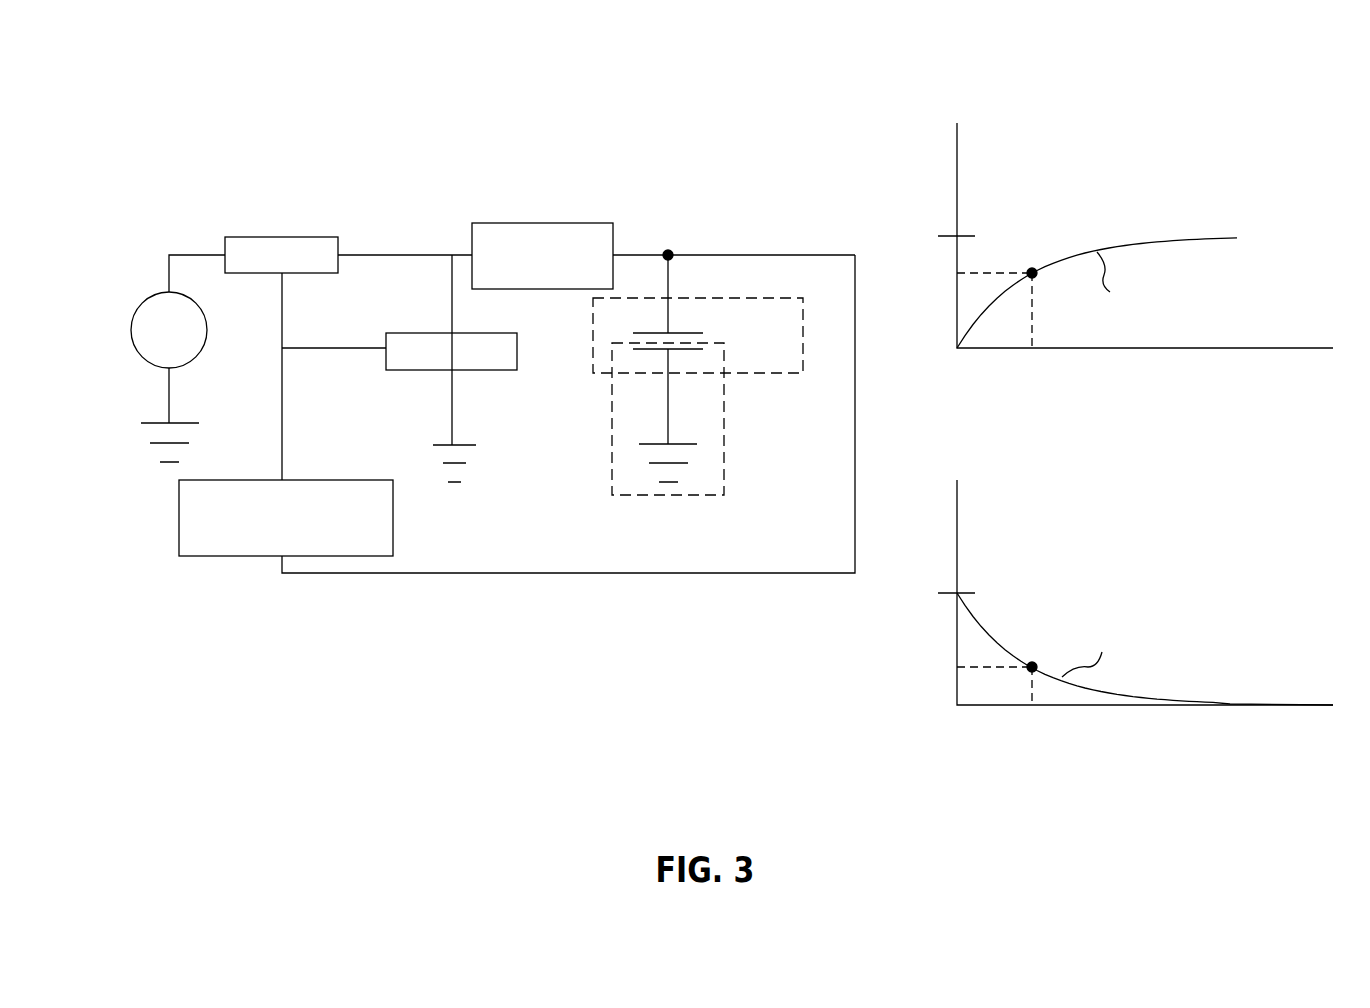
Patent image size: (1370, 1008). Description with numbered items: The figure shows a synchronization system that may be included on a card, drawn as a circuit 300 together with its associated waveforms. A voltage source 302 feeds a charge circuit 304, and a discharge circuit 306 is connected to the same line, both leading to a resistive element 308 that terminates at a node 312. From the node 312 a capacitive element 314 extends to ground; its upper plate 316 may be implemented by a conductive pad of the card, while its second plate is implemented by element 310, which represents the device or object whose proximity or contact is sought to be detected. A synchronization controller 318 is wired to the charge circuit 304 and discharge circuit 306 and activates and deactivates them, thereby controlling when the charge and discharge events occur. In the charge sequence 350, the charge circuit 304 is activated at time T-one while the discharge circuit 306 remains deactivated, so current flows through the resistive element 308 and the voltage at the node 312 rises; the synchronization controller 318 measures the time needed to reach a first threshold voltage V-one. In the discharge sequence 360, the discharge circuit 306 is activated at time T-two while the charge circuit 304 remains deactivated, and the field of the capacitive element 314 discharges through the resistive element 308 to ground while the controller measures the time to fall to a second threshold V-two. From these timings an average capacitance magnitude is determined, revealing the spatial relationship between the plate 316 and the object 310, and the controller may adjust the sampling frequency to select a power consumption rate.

The circuit 300 is at (263, 162).
The voltage source 302 is at (134, 330).
The charge circuit 304 is at (262, 236).
The discharge circuit 306 is at (420, 370).
The resistive element 308 is at (558, 290).
The element 310 is at (724, 483).
The node 312 is at (670, 253).
The capacitive element 314 is at (803, 350).
The plate 316 is at (688, 332).
The synchronization controller 318 is at (208, 556).
The charge sequence 350 is at (1167, 162).
The discharge sequence 360 is at (1215, 545).